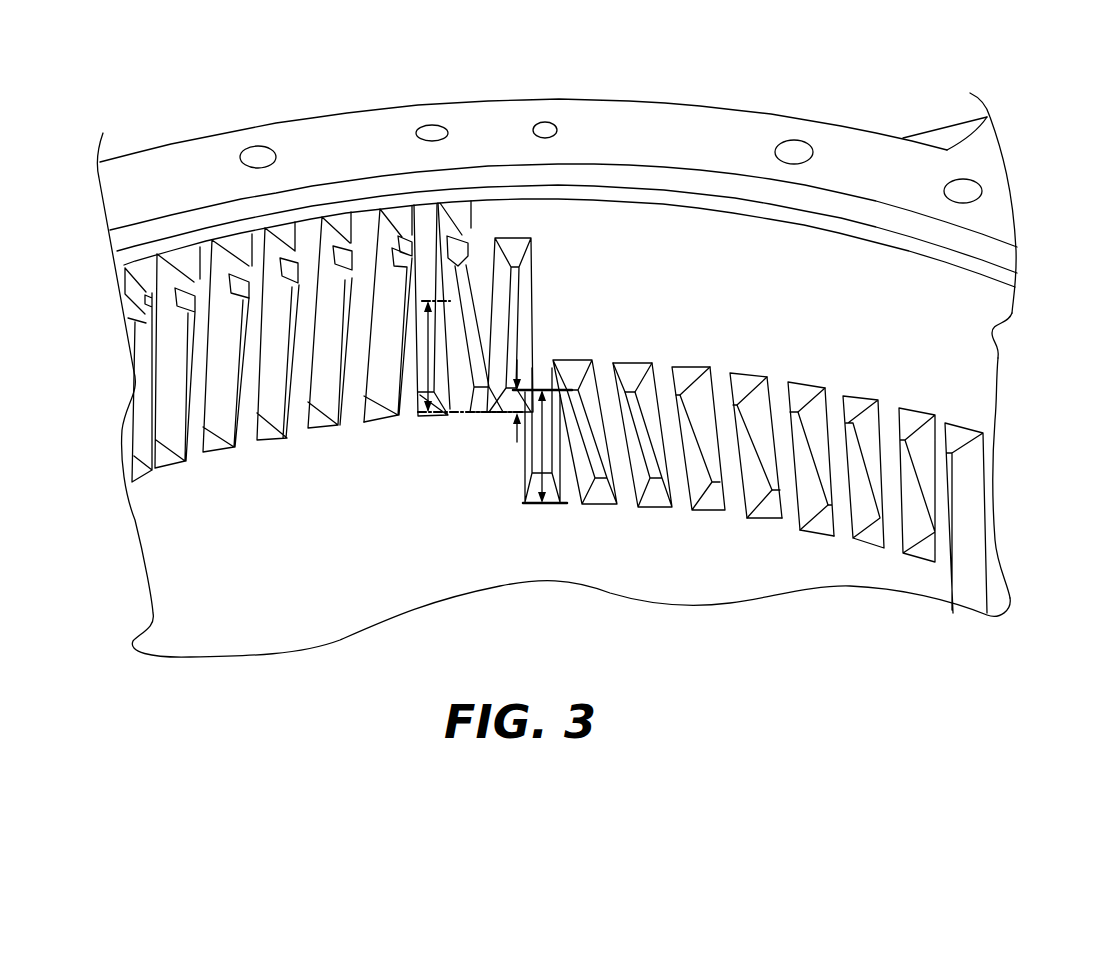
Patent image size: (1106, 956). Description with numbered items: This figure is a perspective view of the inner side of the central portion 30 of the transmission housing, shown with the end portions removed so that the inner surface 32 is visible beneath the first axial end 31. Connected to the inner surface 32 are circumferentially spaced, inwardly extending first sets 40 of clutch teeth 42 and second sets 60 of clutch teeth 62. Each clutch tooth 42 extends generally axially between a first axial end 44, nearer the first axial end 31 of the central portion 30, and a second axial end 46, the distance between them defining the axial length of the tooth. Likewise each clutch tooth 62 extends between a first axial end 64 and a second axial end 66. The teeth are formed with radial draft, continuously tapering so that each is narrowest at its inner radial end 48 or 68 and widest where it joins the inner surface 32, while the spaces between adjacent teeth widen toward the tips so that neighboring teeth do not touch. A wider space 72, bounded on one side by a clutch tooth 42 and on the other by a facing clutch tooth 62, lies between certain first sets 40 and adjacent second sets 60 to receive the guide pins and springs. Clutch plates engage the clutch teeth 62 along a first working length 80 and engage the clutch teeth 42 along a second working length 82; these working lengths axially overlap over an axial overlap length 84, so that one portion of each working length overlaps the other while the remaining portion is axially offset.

The central portion 30 is at (848, 58).
The first axial end 31 is at (690, 120).
The inner surface 32 is at (1010, 322).
The first sets 40 is at (345, 197).
The clutch teeth 42 is at (401, 216).
The first axial end 44 is at (175, 260).
The second axial end 46 is at (356, 416).
The inner radial end 48 is at (292, 265).
The second sets 60 is at (893, 560).
The clutch teeth 62 is at (963, 435).
The first axial end 64 is at (802, 388).
The second axial end 66 is at (787, 518).
The inner radial end 68 is at (686, 378).
The space 72 is at (995, 558).
The first working length 80 is at (542, 456).
The second working length 82 is at (440, 417).
The axial overlap length 84 is at (520, 358).